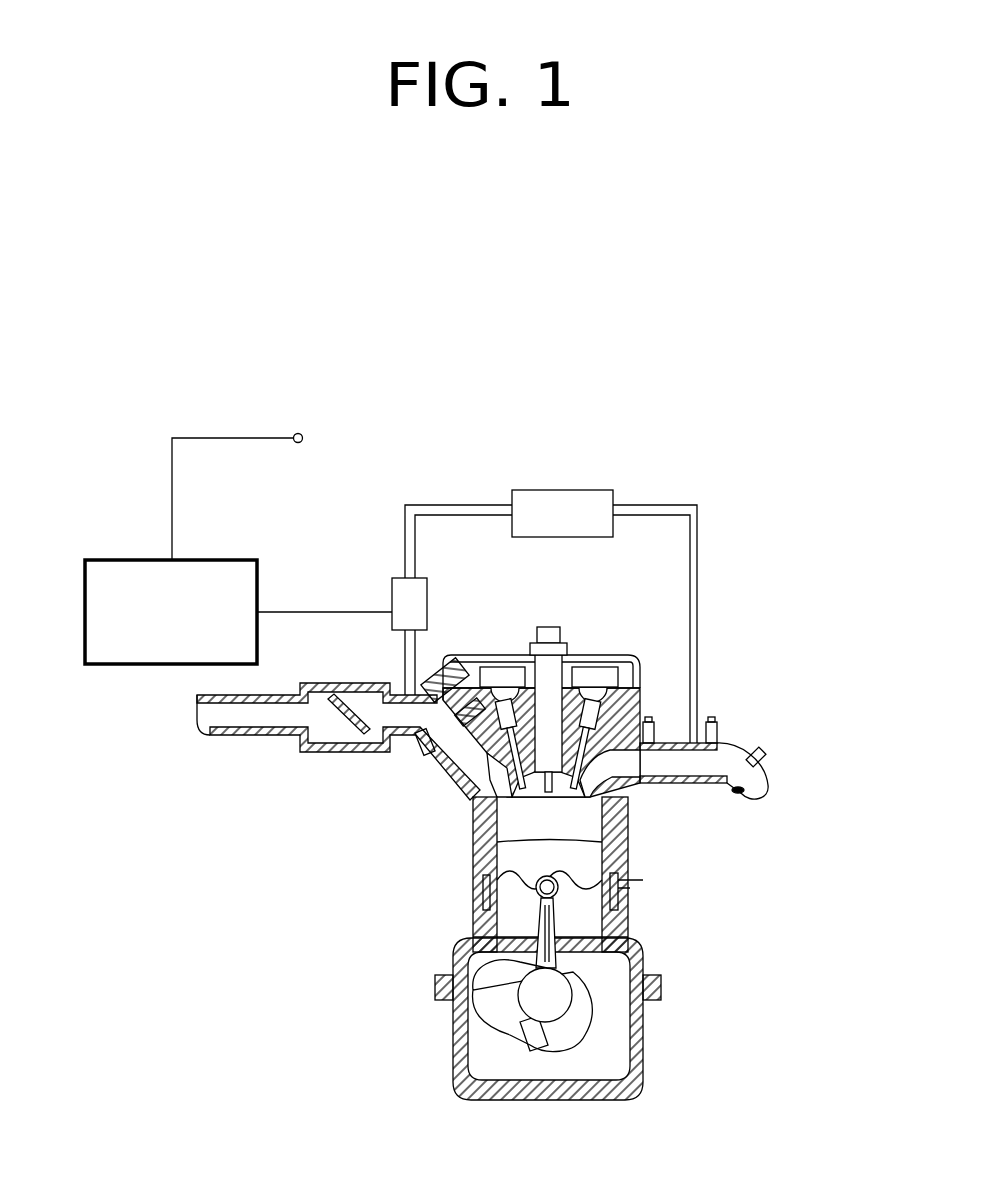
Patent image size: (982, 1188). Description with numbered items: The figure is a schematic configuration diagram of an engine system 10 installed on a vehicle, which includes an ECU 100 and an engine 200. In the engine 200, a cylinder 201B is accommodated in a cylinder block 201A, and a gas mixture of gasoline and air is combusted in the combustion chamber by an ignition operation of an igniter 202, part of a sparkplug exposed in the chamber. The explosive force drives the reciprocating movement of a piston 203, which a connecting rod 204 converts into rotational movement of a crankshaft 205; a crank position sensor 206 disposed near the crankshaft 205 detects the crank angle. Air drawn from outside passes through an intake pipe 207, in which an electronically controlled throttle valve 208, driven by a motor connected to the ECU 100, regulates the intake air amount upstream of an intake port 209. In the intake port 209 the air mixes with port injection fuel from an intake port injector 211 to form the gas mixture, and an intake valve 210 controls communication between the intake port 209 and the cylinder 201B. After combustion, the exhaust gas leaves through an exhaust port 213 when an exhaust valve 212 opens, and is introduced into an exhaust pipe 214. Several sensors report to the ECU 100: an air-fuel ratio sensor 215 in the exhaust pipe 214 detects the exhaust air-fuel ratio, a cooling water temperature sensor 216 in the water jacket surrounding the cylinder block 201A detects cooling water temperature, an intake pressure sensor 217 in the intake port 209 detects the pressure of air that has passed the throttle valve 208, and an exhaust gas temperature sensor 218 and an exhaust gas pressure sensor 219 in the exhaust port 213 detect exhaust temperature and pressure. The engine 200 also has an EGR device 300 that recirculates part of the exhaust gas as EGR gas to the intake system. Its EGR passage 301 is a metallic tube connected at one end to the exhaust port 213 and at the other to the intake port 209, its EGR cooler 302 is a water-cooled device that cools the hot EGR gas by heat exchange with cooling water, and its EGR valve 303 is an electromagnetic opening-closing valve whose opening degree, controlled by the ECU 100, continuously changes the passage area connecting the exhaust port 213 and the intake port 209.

The engine system 10 is at (79, 402).
The ECU 100 is at (86, 558).
The engine 200 is at (822, 648).
The cylinder block 201A is at (650, 938).
The cylinder 201B is at (458, 943).
The igniter 202 is at (560, 626).
The piston 203 is at (577, 862).
The connecting rod 204 is at (478, 963).
The crankshaft 205 is at (553, 1003).
The crank position sensor 206 is at (528, 1038).
The intake pipe 207 is at (275, 717).
The throttle valve 208 is at (352, 738).
The intake port 209 is at (458, 790).
The intake valve 210 is at (473, 822).
The intake port injector 211 is at (455, 655).
The exhaust valve 212 is at (630, 818).
The exhaust port 213 is at (668, 765).
The exhaust pipe 214 is at (765, 802).
The air-fuel ratio sensor 215 is at (767, 751).
The cooling water temperature sensor 216 is at (640, 884).
The intake pressure sensor 217 is at (420, 755).
The exhaust gas temperature sensor 218 is at (652, 718).
The exhaust gas pressure sensor 219 is at (714, 718).
The EGR device 300 is at (752, 508).
The EGR passage 301 is at (700, 603).
The EGR cooler 302 is at (615, 492).
The EGR valve 303 is at (392, 585).